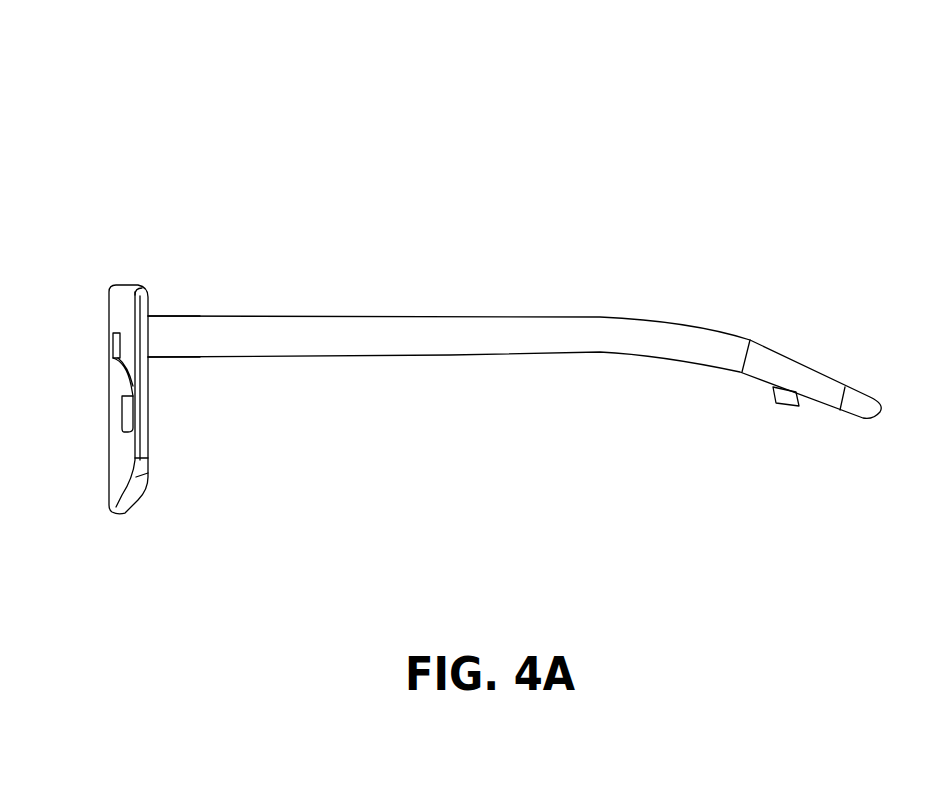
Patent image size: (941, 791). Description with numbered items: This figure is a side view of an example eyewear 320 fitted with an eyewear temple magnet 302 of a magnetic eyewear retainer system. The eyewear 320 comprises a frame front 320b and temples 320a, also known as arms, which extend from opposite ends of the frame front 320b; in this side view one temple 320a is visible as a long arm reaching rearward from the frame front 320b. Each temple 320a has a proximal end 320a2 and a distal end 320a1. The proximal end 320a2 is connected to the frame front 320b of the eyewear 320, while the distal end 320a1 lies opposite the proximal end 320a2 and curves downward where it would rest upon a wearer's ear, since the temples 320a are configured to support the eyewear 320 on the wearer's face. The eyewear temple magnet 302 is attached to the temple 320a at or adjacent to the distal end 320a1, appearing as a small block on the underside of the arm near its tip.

The eyewear 320 is at (502, 74).
The frame front 320b is at (145, 218).
The temple 320a is at (470, 277).
The distal end 320a1 is at (835, 327).
The proximal end 320a2 is at (176, 283).
The eyewear temple magnet 302 is at (765, 428).